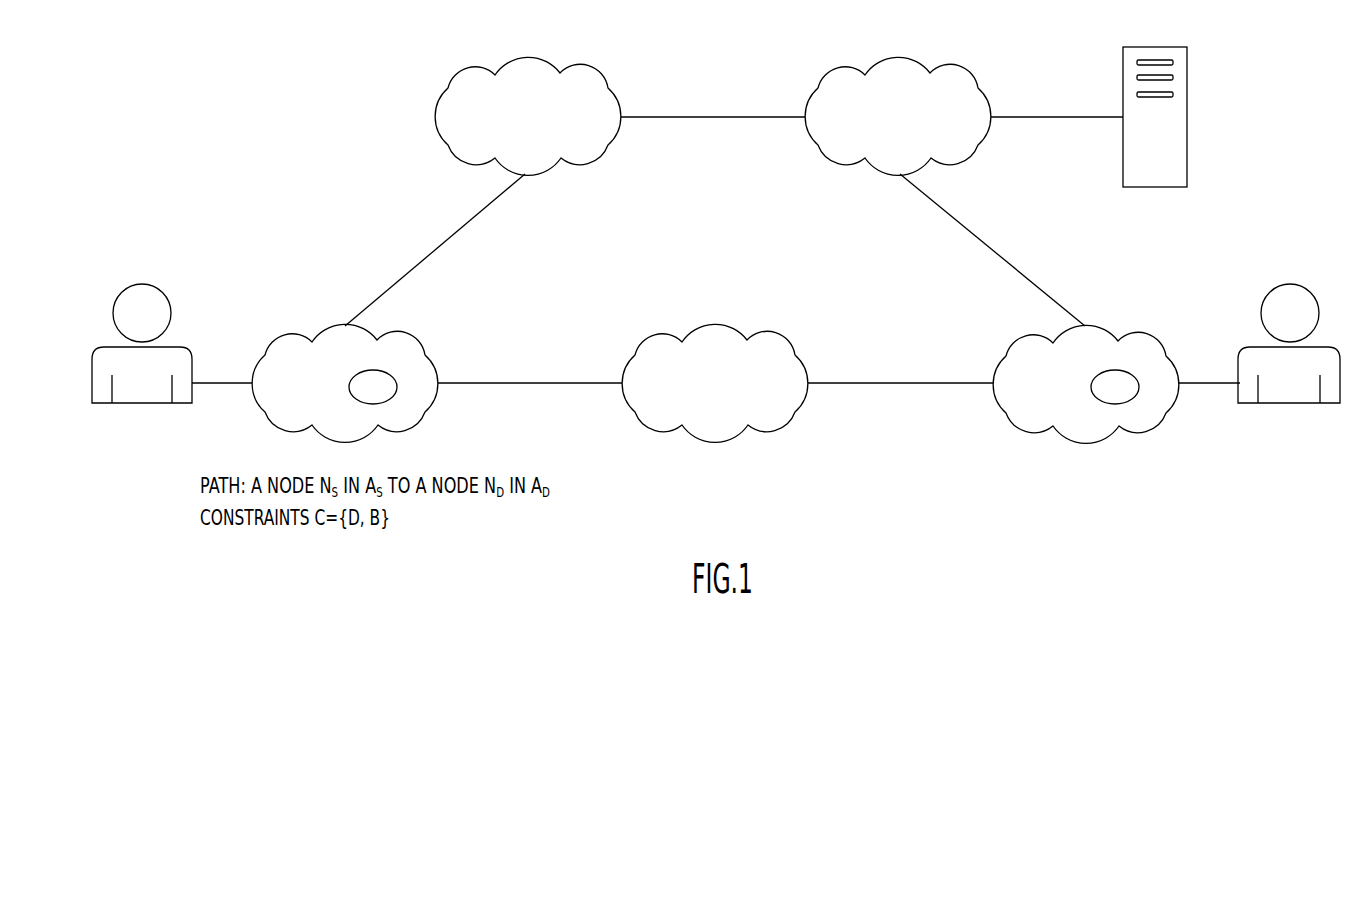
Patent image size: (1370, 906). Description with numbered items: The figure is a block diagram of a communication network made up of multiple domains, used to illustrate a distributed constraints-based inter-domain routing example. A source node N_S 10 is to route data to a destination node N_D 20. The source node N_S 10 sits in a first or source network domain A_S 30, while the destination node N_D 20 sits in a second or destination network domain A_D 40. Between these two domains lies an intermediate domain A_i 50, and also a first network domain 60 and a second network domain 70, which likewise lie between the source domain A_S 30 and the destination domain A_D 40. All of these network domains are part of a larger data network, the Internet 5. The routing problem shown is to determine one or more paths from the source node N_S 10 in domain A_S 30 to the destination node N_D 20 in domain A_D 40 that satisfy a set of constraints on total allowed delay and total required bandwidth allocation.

The Internet 5 is at (609, 299).
The source node N_S 10 is at (397, 380).
The destination node N_D 20 is at (1139, 380).
The source network domain A_S 30 is at (280, 338).
The destination network domain A_D 40 is at (1013, 347).
The intermediate domain A_i 50 is at (790, 347).
The network domain A_1 60 is at (435, 108).
The network domain A_2 70 is at (818, 88).